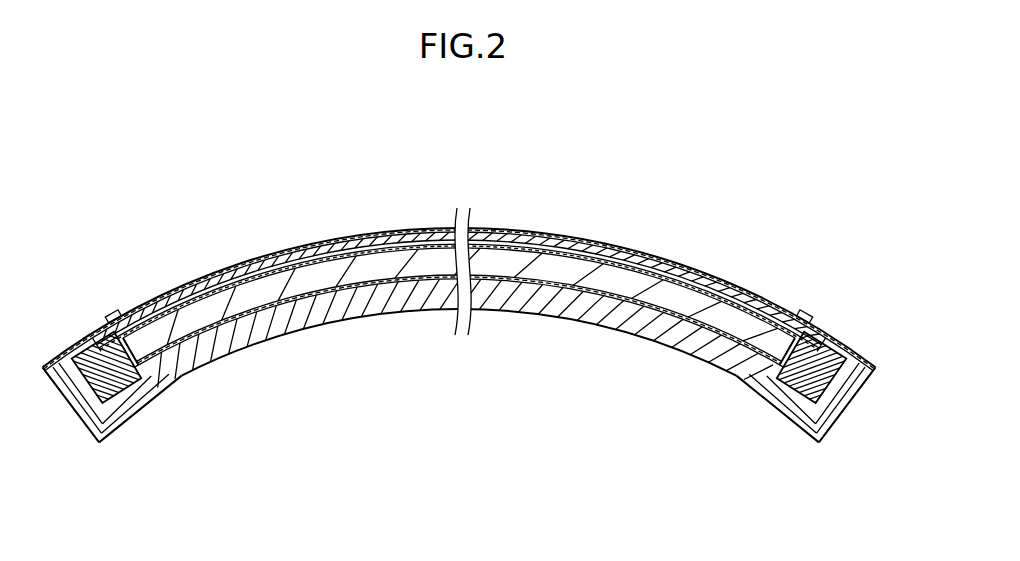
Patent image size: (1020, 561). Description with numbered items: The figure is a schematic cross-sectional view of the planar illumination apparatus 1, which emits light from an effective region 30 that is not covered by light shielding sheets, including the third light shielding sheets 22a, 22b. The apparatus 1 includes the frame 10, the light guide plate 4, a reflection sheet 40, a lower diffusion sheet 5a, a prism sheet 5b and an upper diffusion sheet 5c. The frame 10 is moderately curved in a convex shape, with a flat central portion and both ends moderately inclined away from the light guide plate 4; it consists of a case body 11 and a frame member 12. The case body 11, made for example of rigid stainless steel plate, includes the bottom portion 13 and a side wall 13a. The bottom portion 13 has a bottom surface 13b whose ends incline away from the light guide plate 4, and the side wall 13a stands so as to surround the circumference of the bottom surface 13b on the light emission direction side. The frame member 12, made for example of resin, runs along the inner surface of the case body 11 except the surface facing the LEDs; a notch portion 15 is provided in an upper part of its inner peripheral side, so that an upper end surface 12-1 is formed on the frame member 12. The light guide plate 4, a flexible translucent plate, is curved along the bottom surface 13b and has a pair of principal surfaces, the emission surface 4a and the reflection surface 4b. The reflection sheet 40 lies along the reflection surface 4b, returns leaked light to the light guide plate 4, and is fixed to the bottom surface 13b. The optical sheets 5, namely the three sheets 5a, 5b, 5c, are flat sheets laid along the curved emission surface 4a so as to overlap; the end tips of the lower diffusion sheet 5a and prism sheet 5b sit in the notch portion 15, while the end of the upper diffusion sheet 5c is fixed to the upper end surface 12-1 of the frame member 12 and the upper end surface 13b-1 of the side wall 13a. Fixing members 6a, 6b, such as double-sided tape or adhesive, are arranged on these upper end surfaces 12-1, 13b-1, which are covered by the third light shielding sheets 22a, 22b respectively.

The planar illumination apparatus 1 is at (776, 153).
The light guide plate 4 is at (440, 267).
The emission surface 4a is at (423, 248).
The reflection surface 4b is at (385, 280).
The optical sheets 5 is at (487, 158).
The lower diffusion sheet 5a is at (488, 245).
The prism sheet 5b is at (552, 243).
The upper diffusion sheet 5c is at (603, 245).
The fixing member 6a is at (82, 343).
The fixing member 6b is at (876, 350).
The frame 10 is at (838, 485).
The case body 11 is at (808, 432).
The frame member 12 is at (783, 408).
The upper end surface 12-1 is at (823, 330).
The bottom portion 13 is at (578, 300).
The side wall 13a is at (842, 440).
The bottom surface 13b is at (520, 280).
The upper end surface 13b-1 is at (852, 345).
The notch portion 15 is at (786, 397).
The third light shielding sheet 22a is at (112, 312).
The third light shielding sheet 22b is at (798, 308).
The effective region 30 is at (677, 252).
The reflection sheet 40 is at (285, 302).